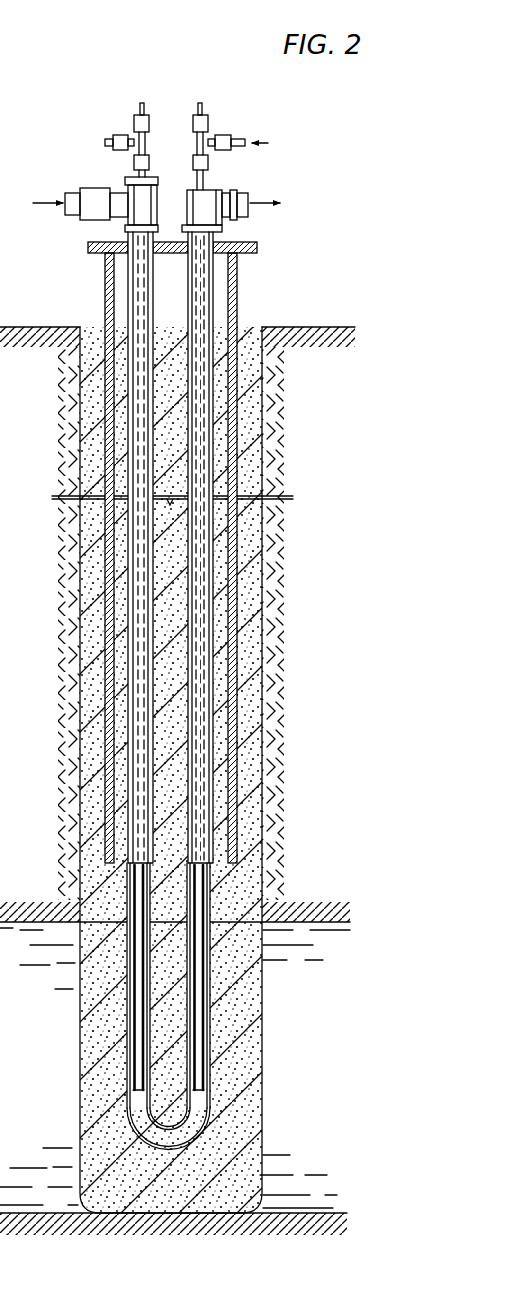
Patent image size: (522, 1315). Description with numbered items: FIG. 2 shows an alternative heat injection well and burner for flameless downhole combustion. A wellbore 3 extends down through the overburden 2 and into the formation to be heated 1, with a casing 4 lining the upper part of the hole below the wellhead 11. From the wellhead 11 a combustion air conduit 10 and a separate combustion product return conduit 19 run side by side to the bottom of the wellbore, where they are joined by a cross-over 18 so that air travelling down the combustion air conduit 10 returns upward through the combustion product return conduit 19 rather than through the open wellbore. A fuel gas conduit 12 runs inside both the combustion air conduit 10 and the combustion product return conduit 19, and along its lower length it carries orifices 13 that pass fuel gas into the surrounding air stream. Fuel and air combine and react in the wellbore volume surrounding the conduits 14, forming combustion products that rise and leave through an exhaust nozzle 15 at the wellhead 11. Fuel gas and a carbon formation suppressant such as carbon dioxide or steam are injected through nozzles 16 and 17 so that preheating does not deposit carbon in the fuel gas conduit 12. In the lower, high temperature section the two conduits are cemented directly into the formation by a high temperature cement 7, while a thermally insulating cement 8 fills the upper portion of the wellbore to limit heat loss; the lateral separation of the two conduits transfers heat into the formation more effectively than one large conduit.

The formation to be heated 1 is at (42, 1094).
The overburden 2 is at (54, 653).
The wellbore 3 is at (169, 456).
The casing 4 is at (239, 468).
The cement 7 is at (95, 1028).
The thermal insulator cement 8 is at (100, 883).
The combustion air conduit 10 is at (137, 545).
The wellhead 11 is at (103, 281).
The fuel gas conduit 12 is at (204, 613).
The orifices 13 is at (142, 985).
The wellbore volume surrounding the conduits 14 is at (247, 923).
The exhaust nozzle 15 is at (222, 190).
The fuel gas injection nozzle 16 is at (142, 103).
The oxidant suppressant injection nozzle 17 is at (104, 141).
The cross-over 18 is at (175, 1153).
The combustion product return conduit 19 is at (218, 412).